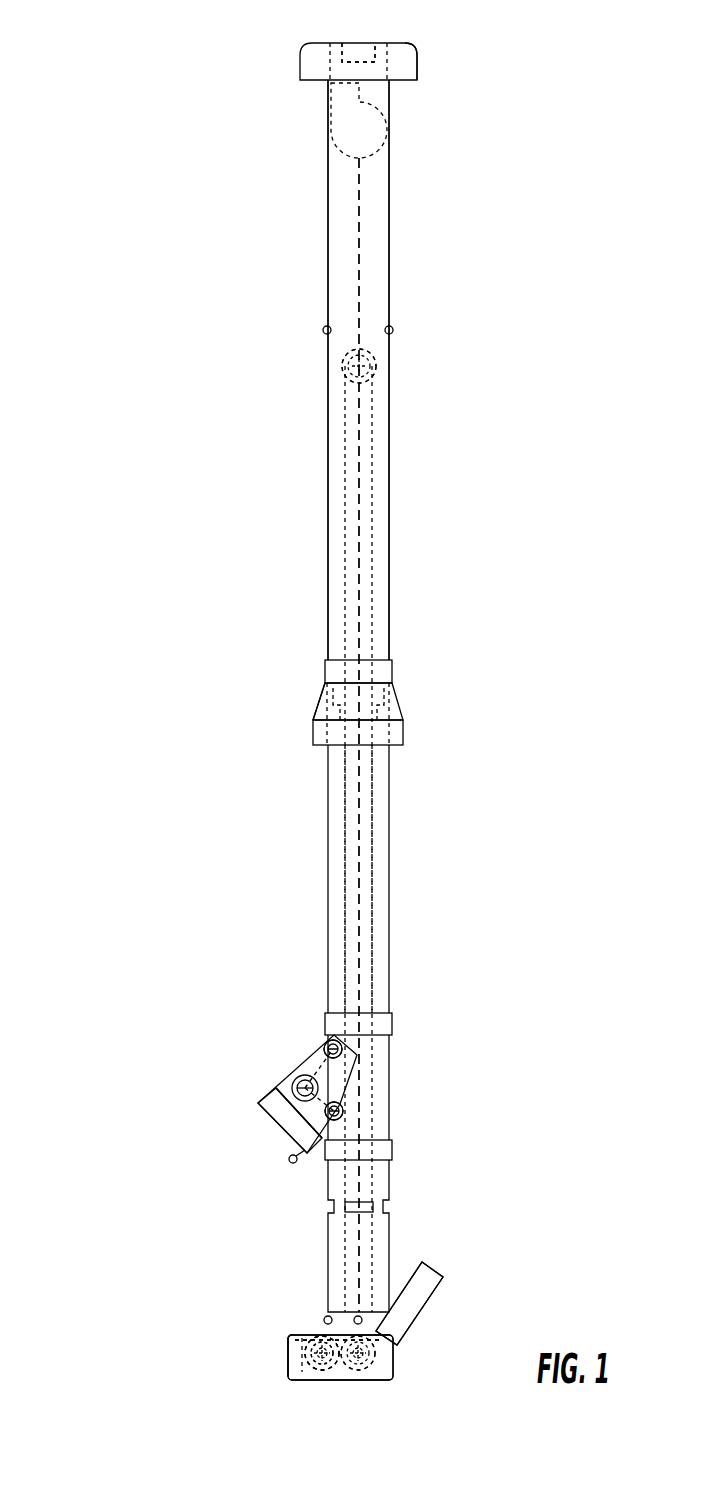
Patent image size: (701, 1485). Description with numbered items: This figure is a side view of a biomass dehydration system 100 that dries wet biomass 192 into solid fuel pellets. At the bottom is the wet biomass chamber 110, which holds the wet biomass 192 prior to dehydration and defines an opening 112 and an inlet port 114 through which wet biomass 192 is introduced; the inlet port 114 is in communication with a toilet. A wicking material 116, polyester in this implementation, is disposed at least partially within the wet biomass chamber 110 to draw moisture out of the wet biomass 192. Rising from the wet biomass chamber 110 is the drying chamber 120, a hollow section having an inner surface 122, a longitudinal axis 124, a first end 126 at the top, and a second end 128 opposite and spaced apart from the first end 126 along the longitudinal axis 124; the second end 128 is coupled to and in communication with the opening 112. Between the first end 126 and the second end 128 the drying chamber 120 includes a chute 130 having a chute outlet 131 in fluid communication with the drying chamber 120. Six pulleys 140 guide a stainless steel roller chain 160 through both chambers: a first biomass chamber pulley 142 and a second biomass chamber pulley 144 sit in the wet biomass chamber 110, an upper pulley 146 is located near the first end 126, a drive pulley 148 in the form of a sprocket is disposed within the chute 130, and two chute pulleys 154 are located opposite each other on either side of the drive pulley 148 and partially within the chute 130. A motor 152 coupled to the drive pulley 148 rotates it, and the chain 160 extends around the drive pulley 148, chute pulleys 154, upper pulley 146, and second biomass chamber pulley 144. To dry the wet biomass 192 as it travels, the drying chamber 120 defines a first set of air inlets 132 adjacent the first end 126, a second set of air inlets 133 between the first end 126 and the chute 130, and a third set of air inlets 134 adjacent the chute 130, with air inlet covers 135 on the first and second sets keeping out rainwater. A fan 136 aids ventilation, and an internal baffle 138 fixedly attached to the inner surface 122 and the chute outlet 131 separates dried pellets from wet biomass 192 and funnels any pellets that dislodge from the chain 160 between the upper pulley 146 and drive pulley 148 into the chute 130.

The biomass dehydration system 100 is at (103, 177).
The wet biomass chamber 110 is at (295, 1360).
The opening 112 is at (322, 1350).
The inlet port 114 is at (432, 1270).
The wicking material 116 is at (298, 1365).
The drying chamber 120 is at (391, 825).
The inner surface 122 is at (383, 943).
The longitudinal axis 124 is at (361, 236).
The first end 126 is at (428, 33).
The second end 128 is at (409, 1259).
The chute 130 is at (279, 1062).
The chute outlet 131 is at (262, 1115).
The first set of air inlets 132 is at (330, 53).
The second set of air inlets 133 is at (390, 716).
The third set of air inlets 134 is at (396, 1203).
The air inlet covers 135 is at (418, 68).
The fan 136 is at (367, 130).
The internal baffle 138 is at (359, 565).
The pulleys 140 is at (406, 378).
The first biomass chamber pulley 142 is at (315, 1340).
The second biomass chamber pulley 144 is at (380, 1347).
The upper pulley 146 is at (366, 364).
The drive pulley 148 is at (296, 1084).
The motor 152 is at (302, 1086).
The chute pulleys 154 is at (345, 1108).
The chain 160 is at (372, 648).
The wet biomass 192 is at (293, 1338).